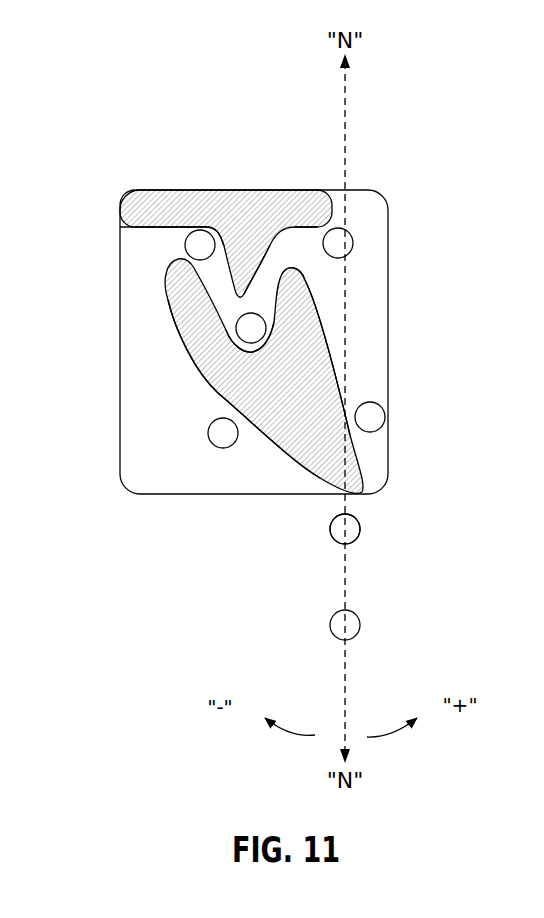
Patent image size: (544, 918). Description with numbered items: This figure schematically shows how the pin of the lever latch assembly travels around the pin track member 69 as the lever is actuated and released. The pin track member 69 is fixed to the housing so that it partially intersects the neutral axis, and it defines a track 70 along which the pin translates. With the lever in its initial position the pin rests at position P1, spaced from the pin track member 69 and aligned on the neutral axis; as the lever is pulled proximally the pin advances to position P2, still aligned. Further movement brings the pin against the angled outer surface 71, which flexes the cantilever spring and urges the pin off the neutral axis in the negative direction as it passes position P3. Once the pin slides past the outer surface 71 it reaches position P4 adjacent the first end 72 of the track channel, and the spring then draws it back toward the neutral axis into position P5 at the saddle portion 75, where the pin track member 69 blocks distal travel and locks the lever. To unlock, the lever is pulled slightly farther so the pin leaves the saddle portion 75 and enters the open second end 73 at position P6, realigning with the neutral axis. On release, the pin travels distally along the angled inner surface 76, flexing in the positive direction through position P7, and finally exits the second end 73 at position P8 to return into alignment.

The pin track member 69 is at (378, 208).
The track 70 is at (177, 343).
The outer surface 71 is at (200, 383).
The first end 72 is at (178, 250).
The open second end 73 is at (300, 258).
The saddle portion 75 is at (250, 353).
The inner surface 76 is at (334, 348).
The position P1' P1 is at (345, 625).
The position P2' P2 is at (345, 527).
The position P3' P3 is at (223, 435).
The position P4' P4 is at (200, 243).
The position P5' P5 is at (250, 325).
The position P6' P6 is at (340, 244).
The position P7' P7 is at (372, 418).
The position P8' P8 is at (350, 530).